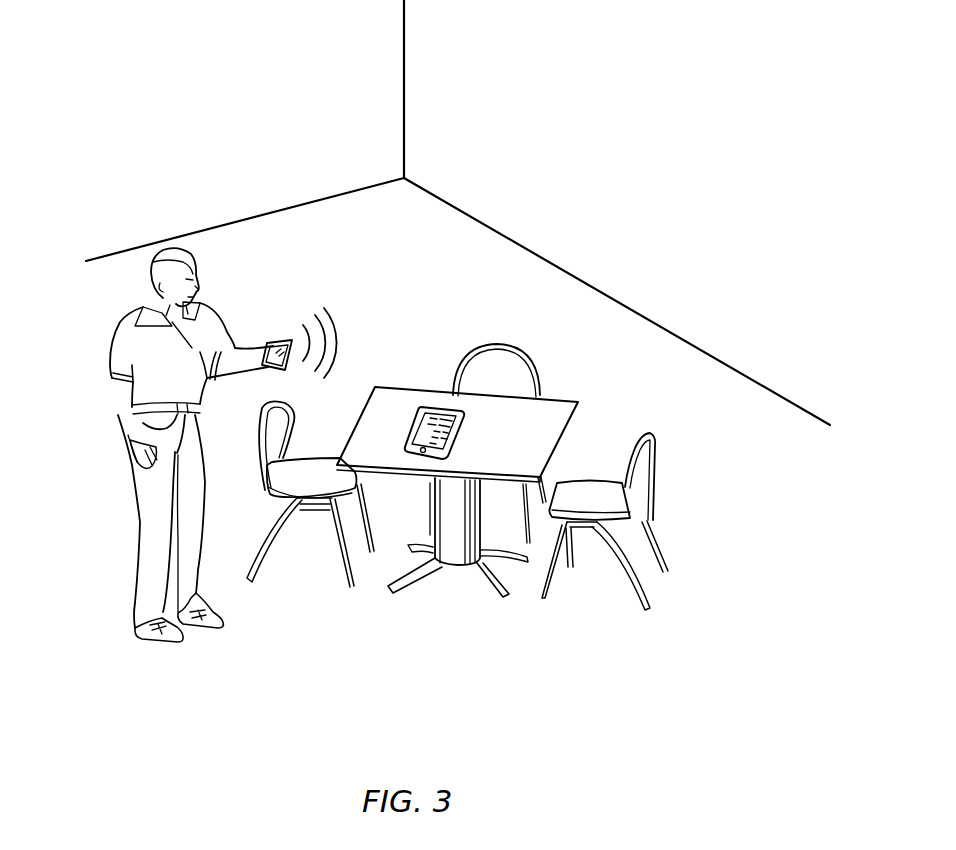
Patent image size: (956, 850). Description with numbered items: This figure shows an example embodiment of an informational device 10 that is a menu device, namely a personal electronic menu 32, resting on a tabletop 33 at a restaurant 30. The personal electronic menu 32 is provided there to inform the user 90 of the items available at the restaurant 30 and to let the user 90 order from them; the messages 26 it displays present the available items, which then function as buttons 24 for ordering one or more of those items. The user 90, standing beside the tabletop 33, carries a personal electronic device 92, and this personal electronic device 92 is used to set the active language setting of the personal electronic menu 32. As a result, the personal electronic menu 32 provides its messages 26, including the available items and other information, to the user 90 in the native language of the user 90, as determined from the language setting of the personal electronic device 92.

The informational device 10 is at (416, 396).
The buttons 24 is at (462, 426).
The messages 26 is at (418, 417).
The restaurant 30 is at (697, 422).
The personal electronic menu 32 is at (416, 399).
The tabletop 33 is at (372, 427).
The user 90 is at (135, 506).
The personal electronic device 92 is at (272, 338).